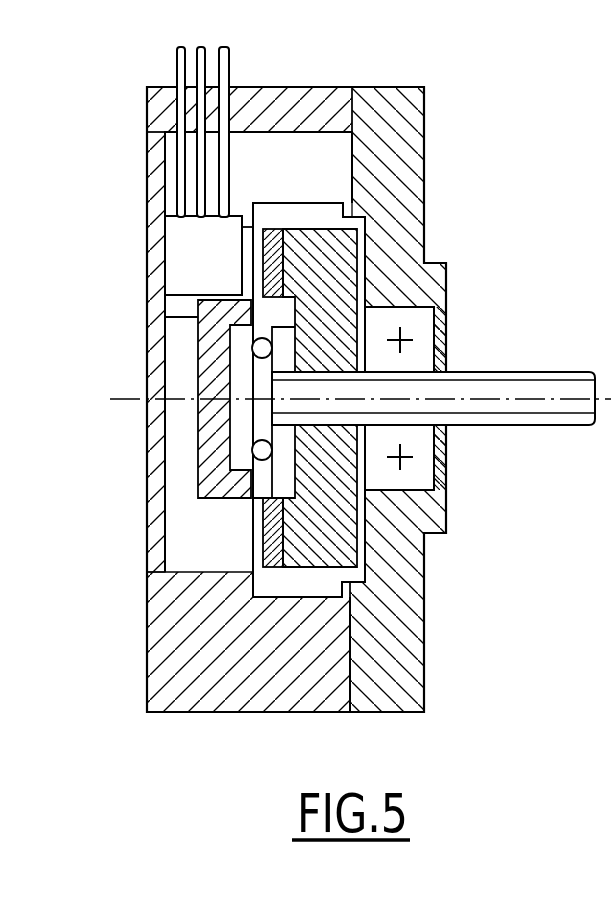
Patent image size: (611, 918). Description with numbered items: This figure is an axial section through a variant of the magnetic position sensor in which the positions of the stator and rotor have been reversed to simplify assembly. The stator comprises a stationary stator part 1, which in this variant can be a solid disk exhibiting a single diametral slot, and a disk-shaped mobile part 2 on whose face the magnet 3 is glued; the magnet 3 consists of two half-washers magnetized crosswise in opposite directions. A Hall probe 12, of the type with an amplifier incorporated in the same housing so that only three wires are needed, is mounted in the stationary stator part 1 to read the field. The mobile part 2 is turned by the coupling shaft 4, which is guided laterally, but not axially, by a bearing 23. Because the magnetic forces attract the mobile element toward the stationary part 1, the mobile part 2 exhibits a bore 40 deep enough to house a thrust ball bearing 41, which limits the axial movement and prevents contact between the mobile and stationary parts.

The stationary stator part 1 is at (182, 308).
The mobile stator part 2 is at (335, 542).
The magnet 3 is at (278, 255).
The coupling shaft 4 is at (528, 388).
The Hall probe 12 is at (202, 252).
The bearing 23 is at (417, 472).
The bore 40 is at (275, 483).
The thrust ball bearing 41 is at (252, 350).